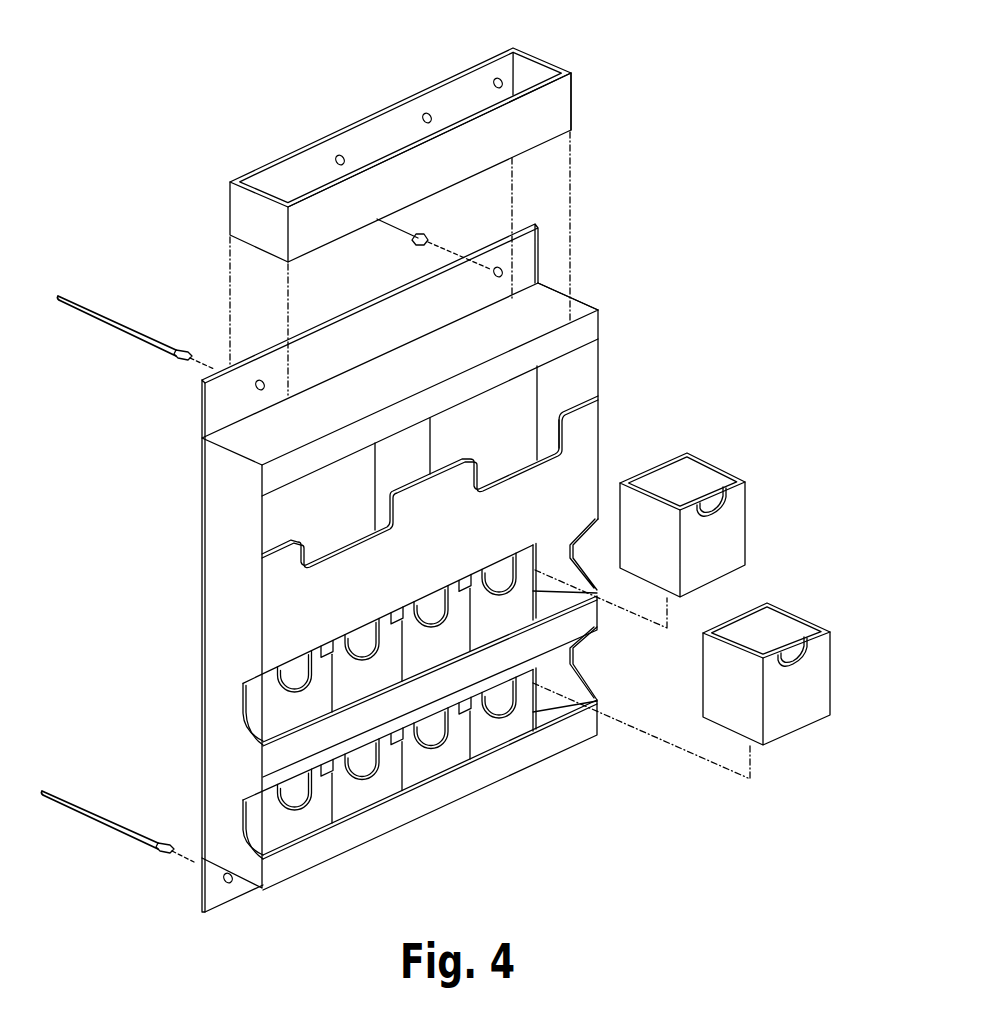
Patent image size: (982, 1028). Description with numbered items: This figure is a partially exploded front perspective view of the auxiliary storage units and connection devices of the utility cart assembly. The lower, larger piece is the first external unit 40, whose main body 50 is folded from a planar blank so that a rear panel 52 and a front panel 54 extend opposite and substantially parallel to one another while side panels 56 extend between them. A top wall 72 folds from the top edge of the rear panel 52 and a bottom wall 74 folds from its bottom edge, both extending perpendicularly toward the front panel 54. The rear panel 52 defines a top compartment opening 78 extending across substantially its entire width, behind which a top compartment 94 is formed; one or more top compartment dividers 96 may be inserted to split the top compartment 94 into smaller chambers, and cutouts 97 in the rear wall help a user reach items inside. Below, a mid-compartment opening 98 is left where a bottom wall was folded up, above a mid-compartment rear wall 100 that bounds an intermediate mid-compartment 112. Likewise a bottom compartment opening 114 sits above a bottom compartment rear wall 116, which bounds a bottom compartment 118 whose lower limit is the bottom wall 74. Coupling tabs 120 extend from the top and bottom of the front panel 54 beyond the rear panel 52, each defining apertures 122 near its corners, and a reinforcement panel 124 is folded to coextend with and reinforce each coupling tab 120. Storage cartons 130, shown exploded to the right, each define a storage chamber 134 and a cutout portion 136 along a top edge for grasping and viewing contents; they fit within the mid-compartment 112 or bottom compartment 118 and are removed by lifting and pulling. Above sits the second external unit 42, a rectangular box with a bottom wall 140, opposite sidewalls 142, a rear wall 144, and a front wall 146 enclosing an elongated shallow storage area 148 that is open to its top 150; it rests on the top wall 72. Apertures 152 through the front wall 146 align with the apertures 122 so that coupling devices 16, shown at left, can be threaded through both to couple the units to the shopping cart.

The coupling devices 16 is at (118, 327).
The first external unit 40 is at (434, 568).
The second external unit 42 is at (237, 208).
The main body 50 is at (270, 633).
The rear panel 52 is at (578, 442).
The front panel 54 is at (568, 335).
The side panels 56 is at (577, 682).
The top wall 72 is at (540, 297).
The bottom wall 74 is at (256, 892).
The top compartment opening 78 is at (560, 398).
The top compartment 94 is at (532, 388).
The top compartment dividers 96 is at (393, 468).
The cutouts 97 is at (330, 555).
The mid-compartment opening 98 is at (262, 692).
The mid-compartment rear wall 100 is at (275, 752).
The mid-compartment 112 is at (558, 592).
The bottom compartment opening 114 is at (268, 795).
The bottom compartment rear wall 116 is at (440, 798).
The bottom compartment 118 is at (548, 718).
The coupling tabs 120 is at (384, 586).
The apertures 122 is at (262, 384).
The reinforcement panel 124 is at (204, 408).
The storage cartons 130 is at (741, 595).
The storage chamber 134 is at (690, 462).
The cutout portion 136 is at (720, 475).
The bottom wall 140 is at (401, 197).
The sidewalls 142 is at (533, 62).
The rear wall 144 is at (555, 108).
The front wall 146 is at (462, 95).
The storage area 148 is at (380, 130).
The top 150 is at (287, 177).
The apertures 152 is at (338, 158).